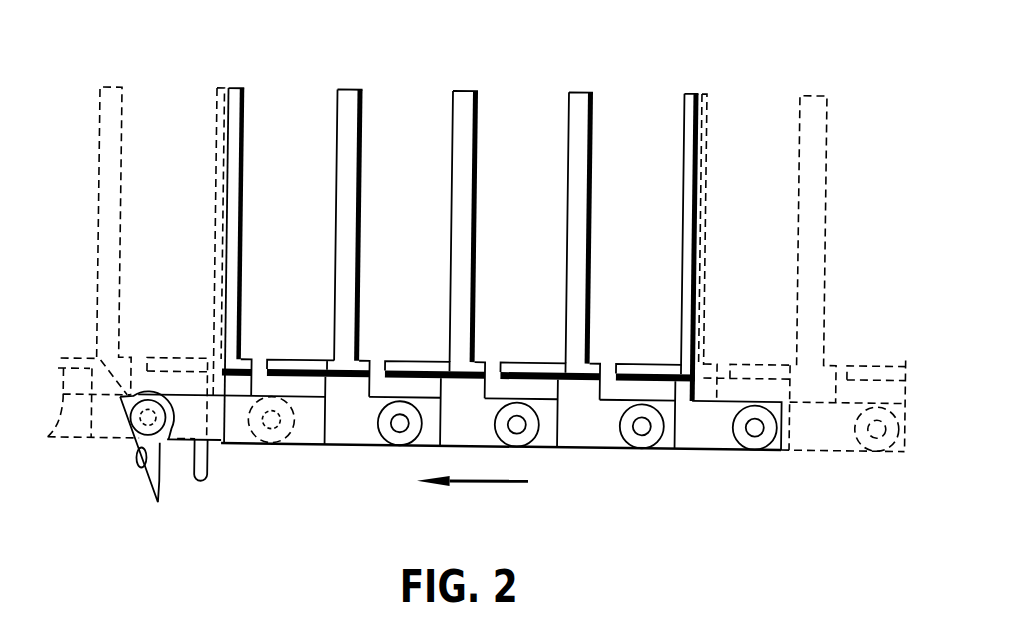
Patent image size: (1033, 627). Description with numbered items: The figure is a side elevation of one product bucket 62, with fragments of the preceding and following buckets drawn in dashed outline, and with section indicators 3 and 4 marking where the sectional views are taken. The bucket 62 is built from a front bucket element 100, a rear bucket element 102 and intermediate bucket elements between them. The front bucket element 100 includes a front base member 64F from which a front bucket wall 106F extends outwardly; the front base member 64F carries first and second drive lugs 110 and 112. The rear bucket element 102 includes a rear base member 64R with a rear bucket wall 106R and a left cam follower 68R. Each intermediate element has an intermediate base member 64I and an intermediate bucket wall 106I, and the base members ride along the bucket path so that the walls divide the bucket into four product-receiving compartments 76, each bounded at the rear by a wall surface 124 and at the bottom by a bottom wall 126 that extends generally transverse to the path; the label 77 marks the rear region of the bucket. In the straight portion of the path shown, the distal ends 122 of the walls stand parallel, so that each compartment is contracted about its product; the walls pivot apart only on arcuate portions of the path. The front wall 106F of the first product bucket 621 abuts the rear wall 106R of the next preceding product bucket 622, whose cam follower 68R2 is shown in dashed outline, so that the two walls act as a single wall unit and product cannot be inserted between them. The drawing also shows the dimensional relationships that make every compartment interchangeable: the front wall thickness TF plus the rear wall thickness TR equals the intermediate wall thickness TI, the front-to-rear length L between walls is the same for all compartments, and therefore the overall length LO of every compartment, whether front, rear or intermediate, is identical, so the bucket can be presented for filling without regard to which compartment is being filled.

The product bucket 62 is at (602, 462).
The first product bucket 621 is at (250, 102).
The second (next preceding) product bucket 622 is at (87, 156).
The front base member 64F is at (294, 450).
The intermediate base member 64I is at (353, 451).
The rear base member 64R is at (721, 449).
The left cam follower 68R is at (248, 433).
The rear wheel of preceding pallet 68R2 is at (88, 354).
The product-receiving compartment 76 is at (525, 92).
The compartment 77 is at (625, 48).
The front bucket element 100 is at (251, 341).
The rear bucket element 102 is at (668, 328).
The front bucket wall 106F is at (236, 210).
The intermediate bucket wall 106I is at (358, 208).
The rear bucket wall 106R is at (210, 171).
The first drive lug 110 is at (163, 484).
The second drive lug 112 is at (134, 469).
The distal ends of the walls 122 is at (450, 92).
The wall surface 124 is at (334, 142).
The bottom wall 126 is at (310, 359).
The section line 3- 3 is at (700, 30).
The section line 4- 4 is at (792, 516).
The front wall thickness TF is at (290, 264).
The overall compartment length LO is at (210, 316).
The front-to-rear compartment length L is at (667, 264).
The intermediate wall thickness TI is at (551, 264).
The rear wall thickness TR is at (709, 264).